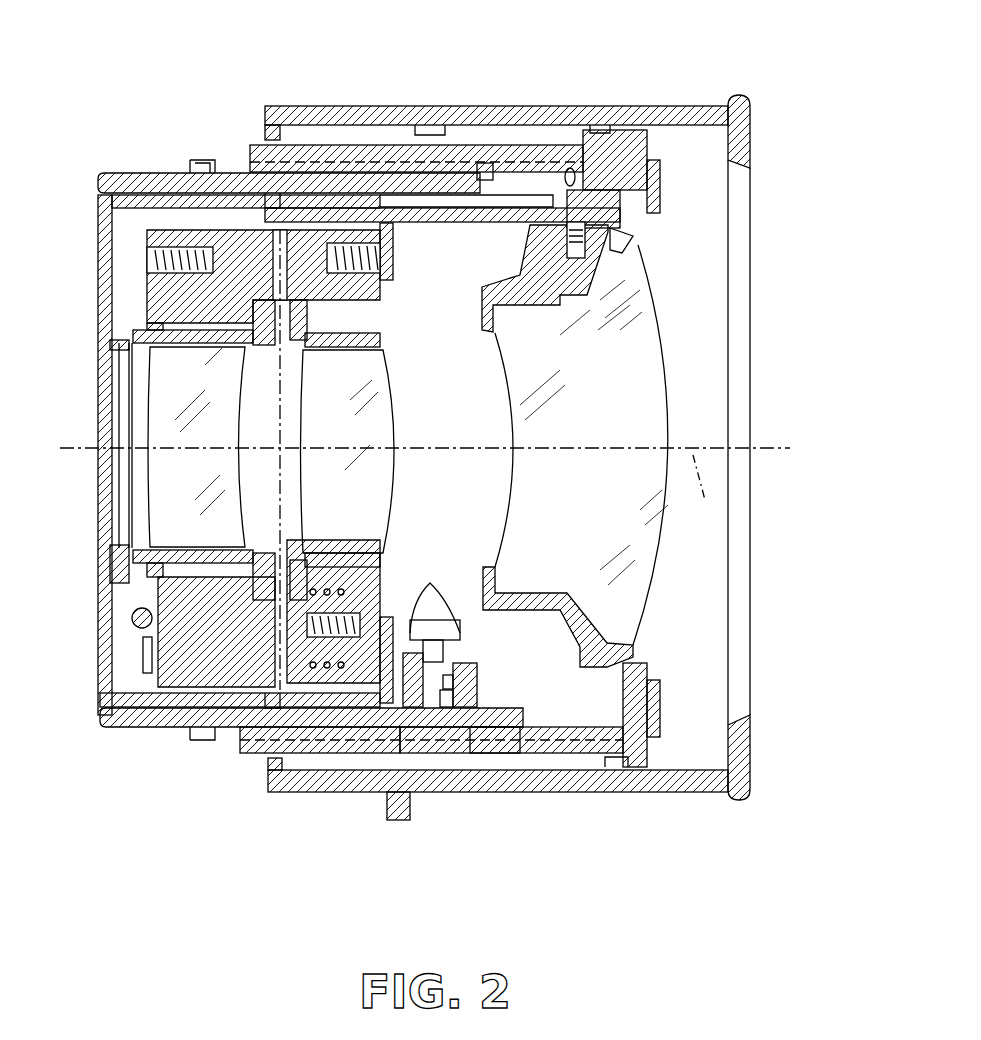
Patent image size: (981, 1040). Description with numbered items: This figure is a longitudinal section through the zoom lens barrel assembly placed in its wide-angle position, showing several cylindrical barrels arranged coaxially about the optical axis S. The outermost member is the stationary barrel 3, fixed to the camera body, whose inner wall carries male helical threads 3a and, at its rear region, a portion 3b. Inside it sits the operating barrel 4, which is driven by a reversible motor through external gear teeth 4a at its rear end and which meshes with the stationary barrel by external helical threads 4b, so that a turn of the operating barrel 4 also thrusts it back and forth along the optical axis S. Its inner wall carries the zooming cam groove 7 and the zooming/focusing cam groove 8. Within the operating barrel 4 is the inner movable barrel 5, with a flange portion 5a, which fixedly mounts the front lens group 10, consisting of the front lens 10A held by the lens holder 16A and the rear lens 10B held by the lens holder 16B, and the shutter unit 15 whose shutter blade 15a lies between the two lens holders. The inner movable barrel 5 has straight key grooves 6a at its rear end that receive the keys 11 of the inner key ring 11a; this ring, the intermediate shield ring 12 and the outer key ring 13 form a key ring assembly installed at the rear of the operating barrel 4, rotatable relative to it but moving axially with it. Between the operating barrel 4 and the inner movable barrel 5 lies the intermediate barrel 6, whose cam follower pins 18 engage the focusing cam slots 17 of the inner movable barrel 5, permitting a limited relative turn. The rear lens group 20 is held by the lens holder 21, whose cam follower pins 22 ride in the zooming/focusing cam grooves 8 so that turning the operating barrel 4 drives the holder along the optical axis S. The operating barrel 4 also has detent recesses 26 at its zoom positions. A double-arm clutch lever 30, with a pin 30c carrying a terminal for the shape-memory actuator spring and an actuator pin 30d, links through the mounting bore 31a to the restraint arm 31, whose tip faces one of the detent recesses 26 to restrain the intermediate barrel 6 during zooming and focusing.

The outer stationary barrel 3 is at (682, 114).
The male helical threads 3a is at (613, 767).
The housing top wall portion 3b is at (430, 127).
The operating barrel 4 is at (418, 735).
The external gear teeth 4a is at (647, 137).
The external female helical threads 4b is at (613, 127).
The inner movable barrel 5 is at (120, 200).
The front holder flange 5a is at (417, 203).
The intermediate barrel 6 is at (150, 182).
The key grooves 6a is at (387, 735).
The zooming cam groove 7 is at (480, 168).
The zooming/focusing cam groove 8 is at (565, 185).
The front lens group 10 is at (250, 450).
The front lens 10A is at (152, 472).
The rear lens 10B is at (375, 480).
The keys 11 is at (452, 220).
The inner key ring 11a is at (622, 268).
The intermediate shield ring 12 is at (650, 232).
The outer key ring 13 is at (660, 203).
The shutter unit 15 is at (177, 637).
The shutter blade 15a is at (288, 395).
The lens holder 16A is at (176, 342).
The lens holder 16B is at (350, 338).
The focusing cam slots 17 is at (272, 200).
The cam follower pins 18 is at (267, 200).
The rear lens group 20 is at (635, 603).
The lens holder 21 is at (540, 597).
The cam follower pins 22 is at (560, 215).
The detent recesses 26 is at (478, 740).
The clutch lever 30 is at (435, 650).
The pin 30c is at (430, 575).
The actuator pin 30d is at (447, 683).
The restraint arm 31 is at (468, 712).
The mounting bore 31a is at (450, 697).
The optical axis S is at (702, 496).